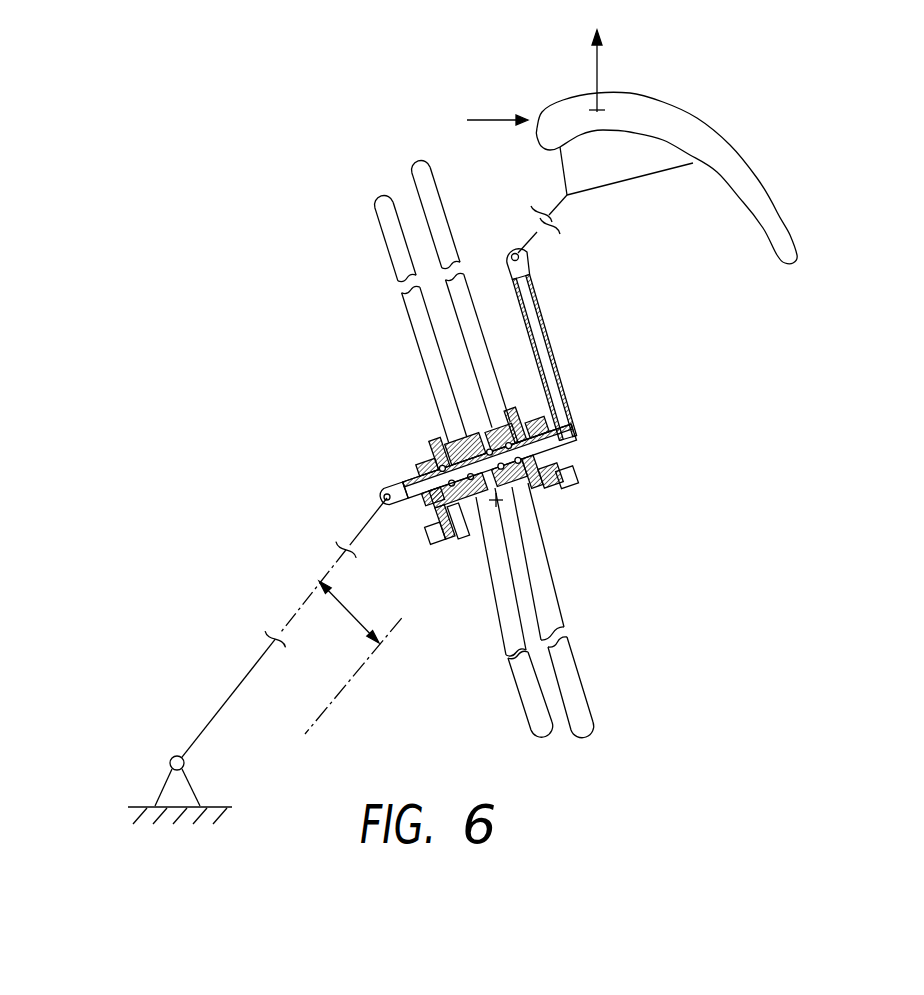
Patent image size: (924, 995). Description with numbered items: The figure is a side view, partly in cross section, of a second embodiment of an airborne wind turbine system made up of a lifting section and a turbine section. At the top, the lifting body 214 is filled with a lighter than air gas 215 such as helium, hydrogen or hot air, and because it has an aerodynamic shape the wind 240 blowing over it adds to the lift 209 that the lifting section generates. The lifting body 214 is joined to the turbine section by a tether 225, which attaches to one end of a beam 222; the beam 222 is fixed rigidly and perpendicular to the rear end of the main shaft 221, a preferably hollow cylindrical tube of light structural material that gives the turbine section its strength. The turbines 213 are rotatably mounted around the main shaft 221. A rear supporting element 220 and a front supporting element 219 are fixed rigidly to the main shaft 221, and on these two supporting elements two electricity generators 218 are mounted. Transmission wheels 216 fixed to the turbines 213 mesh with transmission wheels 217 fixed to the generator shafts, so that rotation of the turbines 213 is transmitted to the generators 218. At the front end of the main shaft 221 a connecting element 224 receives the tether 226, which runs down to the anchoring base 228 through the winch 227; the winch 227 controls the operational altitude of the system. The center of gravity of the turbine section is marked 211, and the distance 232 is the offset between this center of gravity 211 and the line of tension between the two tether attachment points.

The lift 209 is at (598, 78).
The center of gravity 211 is at (496, 505).
The turbines 213 is at (417, 164).
The lifting body 214 is at (780, 208).
The lighter than air gas 215 is at (692, 147).
The transmission wheels 216 is at (512, 411).
The transmission wheels 217 is at (540, 512).
The electricity generators 218 is at (432, 548).
The front supporting element 219 is at (436, 458).
The rear supporting element 220 is at (545, 474).
The main shaft 221 is at (417, 464).
The beam 222 is at (553, 355).
The connecting element 224 is at (384, 492).
The tether 225 is at (545, 200).
The tether 226 is at (360, 528).
The winch 227 is at (174, 757).
The anchoring base 228 is at (192, 783).
The distance 232 is at (350, 615).
The wind 240 is at (484, 117).